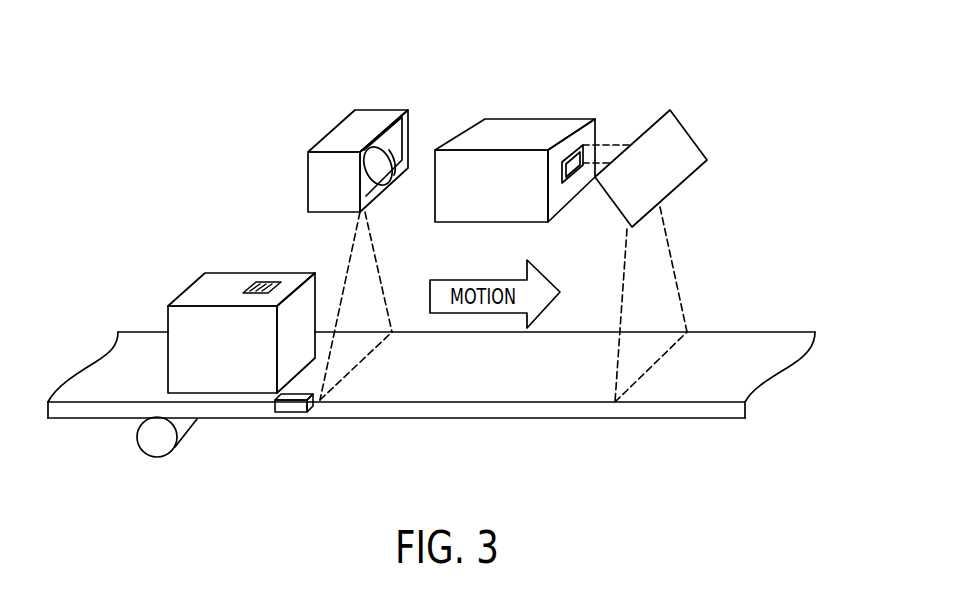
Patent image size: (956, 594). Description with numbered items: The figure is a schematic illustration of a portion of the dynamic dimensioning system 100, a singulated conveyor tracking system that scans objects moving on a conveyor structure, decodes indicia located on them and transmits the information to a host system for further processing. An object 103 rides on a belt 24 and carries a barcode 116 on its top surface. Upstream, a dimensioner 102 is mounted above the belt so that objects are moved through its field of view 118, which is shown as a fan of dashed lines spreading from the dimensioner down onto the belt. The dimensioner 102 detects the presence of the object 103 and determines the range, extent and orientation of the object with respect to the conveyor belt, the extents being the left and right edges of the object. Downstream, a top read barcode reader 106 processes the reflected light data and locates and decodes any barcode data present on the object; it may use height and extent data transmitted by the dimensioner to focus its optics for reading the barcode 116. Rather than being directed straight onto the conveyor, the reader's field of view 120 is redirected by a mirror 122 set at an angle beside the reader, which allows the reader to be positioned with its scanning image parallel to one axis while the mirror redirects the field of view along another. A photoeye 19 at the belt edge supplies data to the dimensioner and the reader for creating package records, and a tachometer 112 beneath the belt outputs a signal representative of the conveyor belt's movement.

The dynamic dimensioning system 100 is at (222, 103).
The belt 24 is at (787, 332).
The tachometer 112 is at (155, 445).
The object 103 is at (214, 271).
The barcode 116 is at (261, 285).
The photoeye 19 is at (289, 416).
The dimensioner 102 is at (373, 108).
The field of view 118 is at (348, 258).
The barcode reader 106 is at (547, 118).
The mirror 122 is at (688, 183).
The field of view 120 is at (669, 292).